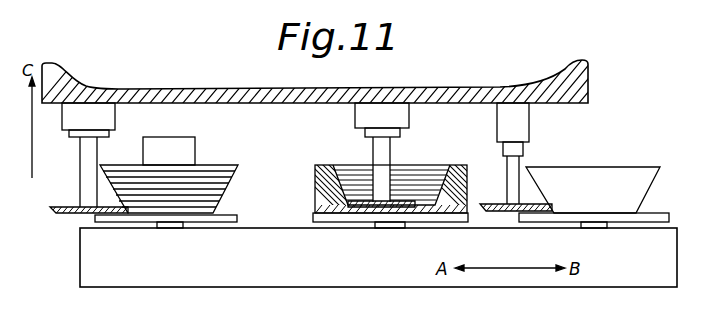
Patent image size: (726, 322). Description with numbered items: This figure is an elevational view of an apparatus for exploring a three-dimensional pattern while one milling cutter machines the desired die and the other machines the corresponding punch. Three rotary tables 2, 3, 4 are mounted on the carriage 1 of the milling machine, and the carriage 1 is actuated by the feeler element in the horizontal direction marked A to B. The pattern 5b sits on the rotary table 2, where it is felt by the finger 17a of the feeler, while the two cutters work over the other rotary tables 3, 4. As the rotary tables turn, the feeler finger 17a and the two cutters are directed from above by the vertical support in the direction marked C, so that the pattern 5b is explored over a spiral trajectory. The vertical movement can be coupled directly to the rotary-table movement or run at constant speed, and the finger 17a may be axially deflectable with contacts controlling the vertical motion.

The carriage 1 is at (153, 283).
The rotary table 2 is at (657, 215).
The rotary table 3 is at (339, 223).
The rotary table 4 is at (236, 218).
The pattern 5b is at (600, 175).
The finger 17a is at (490, 204).